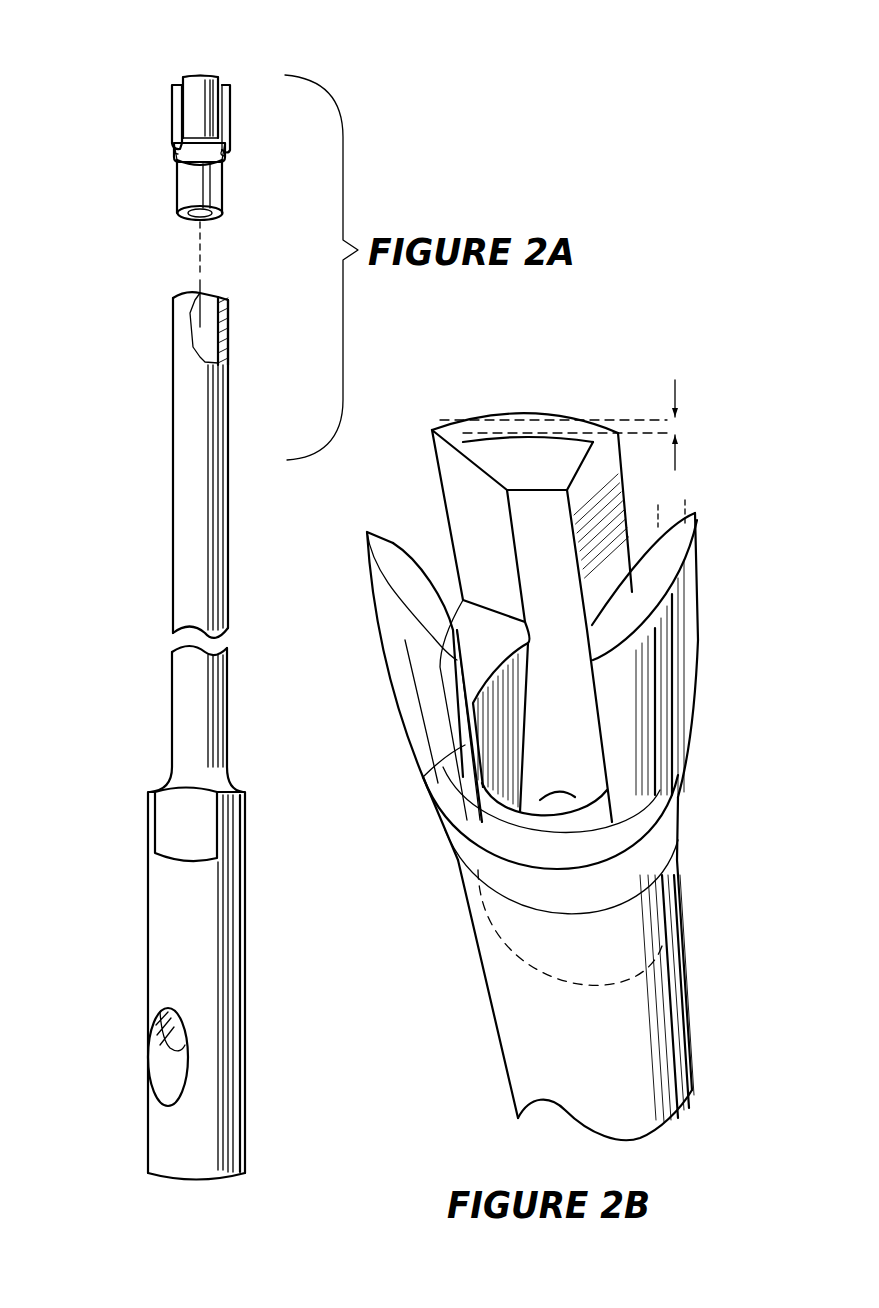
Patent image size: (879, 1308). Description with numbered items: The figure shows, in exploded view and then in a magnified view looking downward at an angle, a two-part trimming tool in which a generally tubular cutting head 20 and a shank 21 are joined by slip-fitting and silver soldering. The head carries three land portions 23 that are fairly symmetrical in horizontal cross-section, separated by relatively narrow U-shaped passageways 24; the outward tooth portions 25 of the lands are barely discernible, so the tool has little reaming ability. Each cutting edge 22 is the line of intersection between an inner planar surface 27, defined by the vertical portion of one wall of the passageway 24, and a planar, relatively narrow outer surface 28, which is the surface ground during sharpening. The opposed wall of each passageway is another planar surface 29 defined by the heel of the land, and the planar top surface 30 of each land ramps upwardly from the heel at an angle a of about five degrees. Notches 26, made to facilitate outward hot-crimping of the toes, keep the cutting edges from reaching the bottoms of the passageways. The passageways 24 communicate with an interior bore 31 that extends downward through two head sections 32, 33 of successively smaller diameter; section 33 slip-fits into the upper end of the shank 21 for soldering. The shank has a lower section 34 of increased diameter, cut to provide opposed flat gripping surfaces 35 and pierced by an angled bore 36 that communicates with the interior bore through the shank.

In FIG. 2A, the cutting head 20 is at (140, 182).
In FIG. 2B, the cutting head 20 is at (370, 637).
In FIG. 2A, the shank 21 is at (140, 523).
In FIG. 2A, the cutting edge 22 is at (168, 100).
In FIG. 2B, the cutting edge 22 is at (437, 458).
In FIG. 2A, the land portion 23 is at (200, 90).
In FIG. 2B, the land portion 23 is at (672, 673).
In FIG. 2B, the U-shaped passageway 24 is at (405, 515).
In FIG. 2A, the tooth portion 25 is at (165, 78).
In FIG. 2B, the tooth portion 25 is at (708, 577).
In FIG. 2A, the notch 26 is at (220, 147).
In FIG. 2B, the notch 26 is at (472, 620).
In FIG. 2A, the inner planar surface 27 is at (222, 100).
In FIG. 2B, the inner planar surface 27 is at (460, 487).
In FIG. 2A, the outer surface 28 is at (215, 85).
In FIG. 2B, the outer surface 28 is at (452, 718).
In FIG. 2A, the planar surface 29 is at (222, 120).
In FIG. 2B, the planar surface 29 is at (592, 488).
In FIG. 2A, the top surface 30 is at (197, 65).
In FIG. 2B, the top surface 30 is at (383, 585).
In FIG. 2A, the interior bore 31 is at (197, 215).
In FIG. 2B, the interior bore 31 is at (560, 792).
In FIG. 2A, the head section 32 is at (175, 155).
In FIG. 2B, the head section 32 is at (675, 777).
In FIG. 2A, the head section 33 is at (217, 192).
In FIG. 2B, the head section 33 is at (497, 950).
In FIG. 2A, the lower section 34 is at (178, 955).
In FIG. 2A, the flat gripping surface 35 is at (193, 823).
In FIG. 2A, the angled bore 36 is at (168, 1060).
In FIG. 2B, the angle α a is at (565, 425).